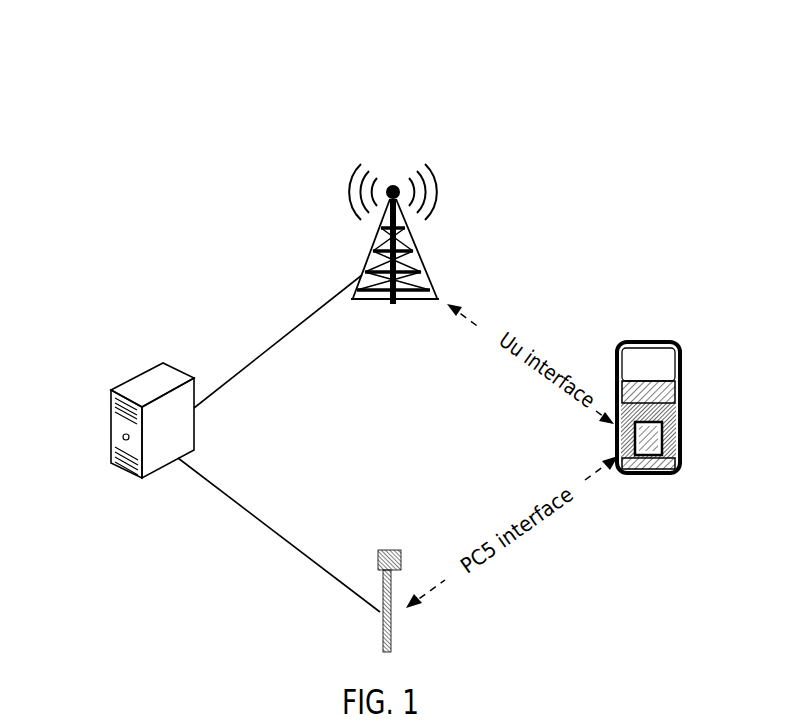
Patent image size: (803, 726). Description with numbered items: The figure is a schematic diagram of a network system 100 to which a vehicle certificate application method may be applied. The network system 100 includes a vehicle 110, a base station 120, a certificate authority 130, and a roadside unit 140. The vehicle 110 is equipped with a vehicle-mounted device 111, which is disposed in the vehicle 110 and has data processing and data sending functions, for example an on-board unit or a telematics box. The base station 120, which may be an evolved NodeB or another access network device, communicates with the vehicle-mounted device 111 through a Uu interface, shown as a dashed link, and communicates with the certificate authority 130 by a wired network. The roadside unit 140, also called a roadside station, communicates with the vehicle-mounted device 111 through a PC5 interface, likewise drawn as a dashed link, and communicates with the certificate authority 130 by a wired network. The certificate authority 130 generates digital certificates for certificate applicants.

The network system 100 is at (128, 58).
The vehicle 110 is at (652, 342).
The vehicle-mounted device 111 is at (682, 414).
The base station 120 is at (403, 160).
The certificate authority 130 is at (111, 407).
The roadside unit 140 is at (408, 558).